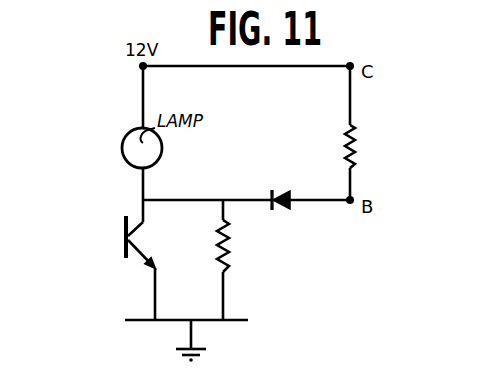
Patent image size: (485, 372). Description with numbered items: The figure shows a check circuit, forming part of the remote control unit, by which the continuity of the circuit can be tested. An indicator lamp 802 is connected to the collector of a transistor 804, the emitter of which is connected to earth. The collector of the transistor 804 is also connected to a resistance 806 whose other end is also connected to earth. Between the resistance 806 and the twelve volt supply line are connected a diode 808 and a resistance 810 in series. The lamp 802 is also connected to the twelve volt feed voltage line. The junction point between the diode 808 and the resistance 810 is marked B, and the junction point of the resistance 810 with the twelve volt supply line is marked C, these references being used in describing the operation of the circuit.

The indicator lamp 802 is at (128, 136).
The transistor 804 is at (122, 242).
The resistance 806 is at (229, 248).
The diode 808 is at (283, 213).
The resistance 810 is at (356, 148).